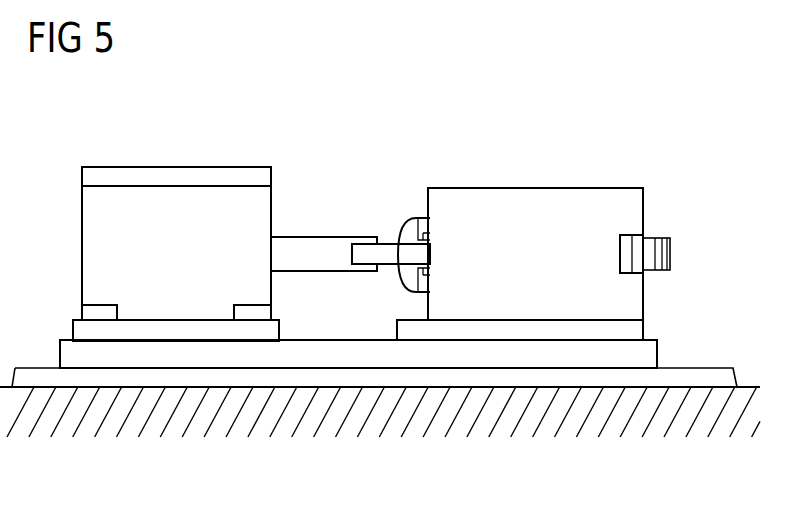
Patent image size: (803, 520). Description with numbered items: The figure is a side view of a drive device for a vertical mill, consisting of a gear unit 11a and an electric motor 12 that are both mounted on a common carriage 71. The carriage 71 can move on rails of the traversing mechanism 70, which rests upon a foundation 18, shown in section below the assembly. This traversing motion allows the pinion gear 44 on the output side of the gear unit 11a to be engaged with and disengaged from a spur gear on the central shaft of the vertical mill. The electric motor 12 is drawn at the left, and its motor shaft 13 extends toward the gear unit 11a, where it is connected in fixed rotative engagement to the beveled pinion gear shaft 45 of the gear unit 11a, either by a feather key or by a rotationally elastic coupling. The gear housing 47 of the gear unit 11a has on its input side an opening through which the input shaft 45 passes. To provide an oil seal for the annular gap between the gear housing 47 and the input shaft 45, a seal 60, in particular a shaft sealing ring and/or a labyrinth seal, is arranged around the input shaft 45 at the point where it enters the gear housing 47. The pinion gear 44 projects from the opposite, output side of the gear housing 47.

The electric motor 12 is at (169, 197).
The motor shaft 13 is at (303, 246).
The beveled pinion gear shaft 45 is at (362, 258).
The seal 60 is at (429, 238).
The gear unit 11a is at (520, 227).
The gear housing 47 is at (528, 198).
The pinion gear 44 is at (657, 255).
The carriage 71 is at (647, 350).
The traversing mechanism 70 is at (713, 377).
The foundation 18 is at (703, 422).